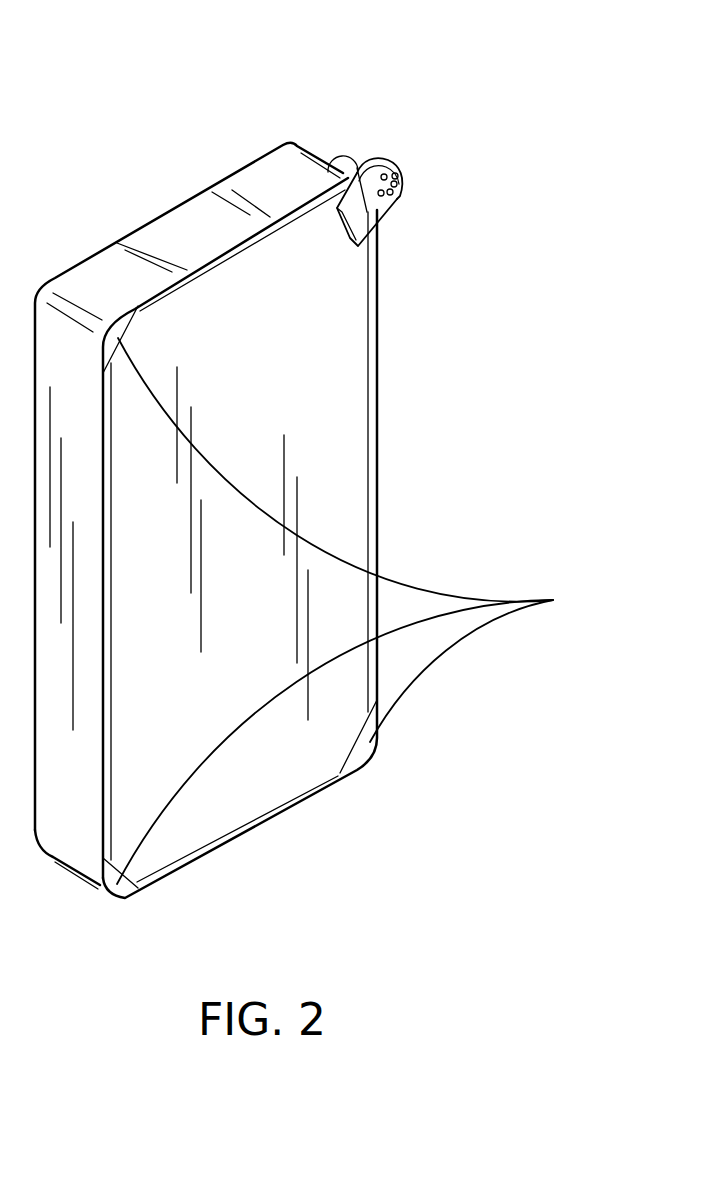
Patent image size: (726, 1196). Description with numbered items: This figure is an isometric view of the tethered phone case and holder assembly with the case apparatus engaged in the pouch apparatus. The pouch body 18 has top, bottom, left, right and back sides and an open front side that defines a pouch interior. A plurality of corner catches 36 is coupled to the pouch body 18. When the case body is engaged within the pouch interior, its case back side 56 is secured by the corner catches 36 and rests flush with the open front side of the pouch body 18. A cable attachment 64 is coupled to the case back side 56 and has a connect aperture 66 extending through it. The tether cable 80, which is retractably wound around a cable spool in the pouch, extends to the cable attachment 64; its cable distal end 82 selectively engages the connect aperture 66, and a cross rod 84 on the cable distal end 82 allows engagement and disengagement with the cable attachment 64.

The pouch body 18 is at (194, 226).
The corner catches 36 is at (553, 600).
The case back side 56 is at (325, 458).
The cable attachment 64 is at (357, 168).
The connect aperture 66 is at (383, 210).
The tether cable 80 is at (347, 163).
The cable distal end 82 is at (397, 193).
The cross rod 84 is at (400, 165).